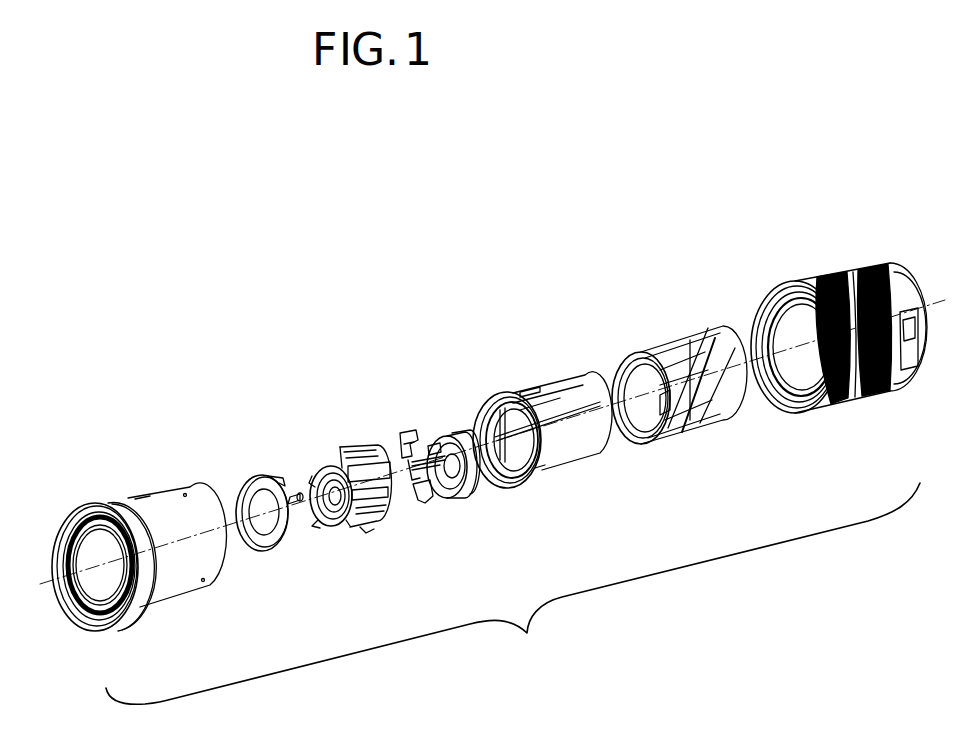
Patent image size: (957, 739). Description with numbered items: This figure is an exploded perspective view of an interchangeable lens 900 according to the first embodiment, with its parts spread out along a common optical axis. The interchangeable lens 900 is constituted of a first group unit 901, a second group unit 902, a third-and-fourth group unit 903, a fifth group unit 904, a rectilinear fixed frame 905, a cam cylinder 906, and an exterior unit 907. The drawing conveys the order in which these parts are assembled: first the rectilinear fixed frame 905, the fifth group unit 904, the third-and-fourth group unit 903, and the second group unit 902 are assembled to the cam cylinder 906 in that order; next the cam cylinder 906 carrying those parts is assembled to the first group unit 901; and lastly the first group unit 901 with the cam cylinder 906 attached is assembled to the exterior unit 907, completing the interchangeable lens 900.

The interchangeable lens 900 is at (513, 593).
The first group unit 901 is at (145, 593).
The second group unit 902 is at (270, 552).
The third-and-fourth group unit 903 is at (360, 530).
The fifth group unit 904 is at (441, 497).
The rectilinear fixed frame 905 is at (567, 460).
The cam cylinder 906 is at (700, 435).
The exterior unit 907 is at (857, 400).